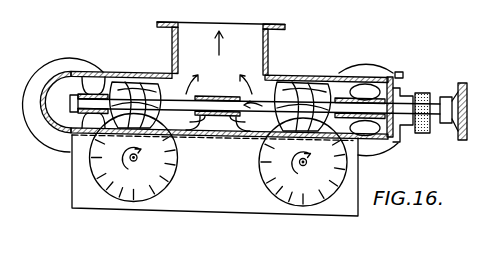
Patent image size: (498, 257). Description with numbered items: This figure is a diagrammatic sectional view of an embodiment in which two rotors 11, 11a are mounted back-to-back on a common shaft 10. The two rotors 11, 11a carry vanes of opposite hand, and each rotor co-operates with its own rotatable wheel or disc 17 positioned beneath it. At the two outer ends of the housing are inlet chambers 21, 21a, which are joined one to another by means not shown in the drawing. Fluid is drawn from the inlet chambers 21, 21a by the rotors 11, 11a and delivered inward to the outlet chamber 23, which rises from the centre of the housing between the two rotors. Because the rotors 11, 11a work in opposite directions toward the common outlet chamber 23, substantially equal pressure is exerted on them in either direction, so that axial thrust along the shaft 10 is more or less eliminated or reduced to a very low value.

The shaft 10 is at (438, 106).
The rotor 11 is at (138, 100).
The rotor 11a is at (311, 104).
The rotatable wheel or disc 17 is at (128, 190).
The inlet chamber 21 is at (60, 96).
The inlet chamber 21a is at (372, 90).
The outlet chamber 23 is at (248, 50).